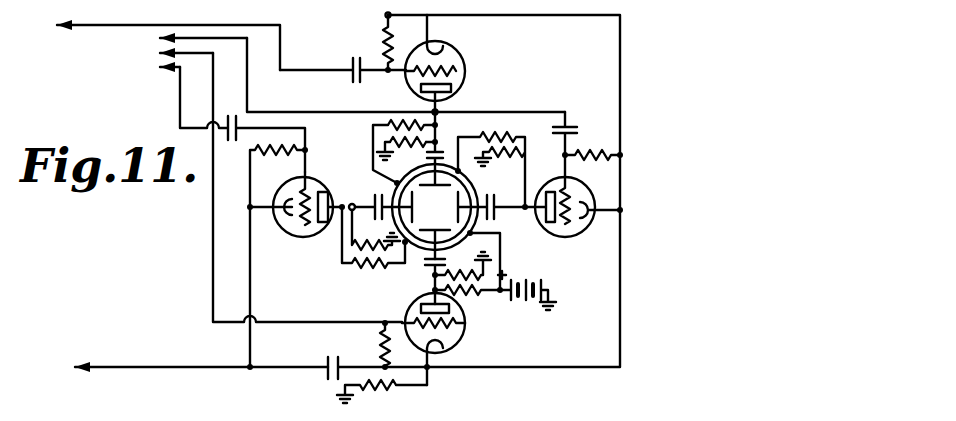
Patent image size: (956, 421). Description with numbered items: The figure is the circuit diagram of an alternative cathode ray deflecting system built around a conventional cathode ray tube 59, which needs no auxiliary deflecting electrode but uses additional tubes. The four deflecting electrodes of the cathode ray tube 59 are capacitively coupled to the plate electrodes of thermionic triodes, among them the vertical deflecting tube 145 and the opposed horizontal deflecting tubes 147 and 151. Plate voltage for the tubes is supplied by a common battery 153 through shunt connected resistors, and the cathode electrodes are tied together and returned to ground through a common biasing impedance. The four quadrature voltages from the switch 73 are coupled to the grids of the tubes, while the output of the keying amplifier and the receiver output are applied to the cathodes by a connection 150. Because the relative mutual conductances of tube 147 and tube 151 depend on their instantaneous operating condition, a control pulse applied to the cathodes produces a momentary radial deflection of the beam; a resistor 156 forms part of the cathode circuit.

The switch 73 is at (97, 63).
The thermionic triode 145 is at (465, 64).
The cathode ray tube 59 is at (446, 216).
The thermionic triode 147 is at (278, 236).
The thermionic triode 151 is at (558, 237).
The battery 153 is at (538, 288).
The connection 150 is at (174, 348).
The resistor 156 is at (383, 398).